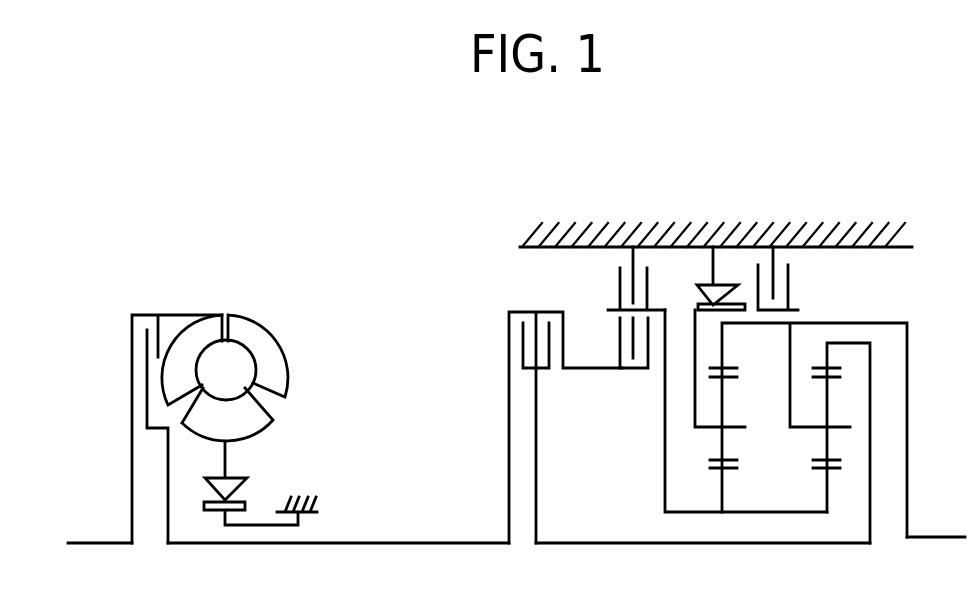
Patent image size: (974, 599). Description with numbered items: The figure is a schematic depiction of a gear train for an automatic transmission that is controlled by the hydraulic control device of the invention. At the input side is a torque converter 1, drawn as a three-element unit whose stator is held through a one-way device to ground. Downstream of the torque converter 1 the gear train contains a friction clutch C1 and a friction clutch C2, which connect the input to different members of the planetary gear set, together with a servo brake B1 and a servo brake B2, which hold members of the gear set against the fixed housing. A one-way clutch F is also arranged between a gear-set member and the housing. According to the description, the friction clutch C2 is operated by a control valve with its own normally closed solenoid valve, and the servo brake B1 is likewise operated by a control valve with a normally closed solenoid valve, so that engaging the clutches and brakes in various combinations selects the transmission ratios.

The torque converter 1 is at (285, 333).
The friction clutch C1 is at (533, 308).
The servo brake B1 is at (613, 290).
The friction clutch C2 is at (633, 373).
The one-way clutch F is at (698, 283).
The servo brake B2 is at (795, 283).